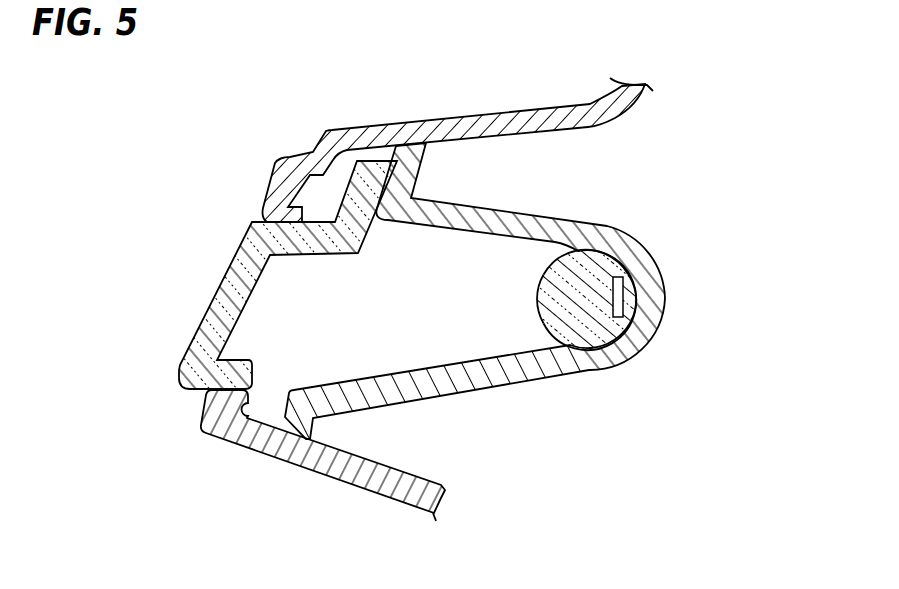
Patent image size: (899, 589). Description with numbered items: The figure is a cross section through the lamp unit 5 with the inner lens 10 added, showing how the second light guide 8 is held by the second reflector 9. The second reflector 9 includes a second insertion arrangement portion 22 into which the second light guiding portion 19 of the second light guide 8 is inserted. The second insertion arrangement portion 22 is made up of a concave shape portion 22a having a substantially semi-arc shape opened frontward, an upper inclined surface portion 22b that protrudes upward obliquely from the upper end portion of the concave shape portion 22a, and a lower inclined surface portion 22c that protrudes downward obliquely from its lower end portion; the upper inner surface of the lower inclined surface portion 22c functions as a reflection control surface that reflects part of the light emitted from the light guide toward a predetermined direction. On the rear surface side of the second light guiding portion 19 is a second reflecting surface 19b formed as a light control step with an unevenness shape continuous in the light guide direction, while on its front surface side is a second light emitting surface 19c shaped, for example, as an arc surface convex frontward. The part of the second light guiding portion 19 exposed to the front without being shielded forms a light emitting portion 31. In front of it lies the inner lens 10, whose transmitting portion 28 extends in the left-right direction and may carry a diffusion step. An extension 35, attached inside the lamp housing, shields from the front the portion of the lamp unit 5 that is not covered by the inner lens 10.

The lamp unit 5 is at (430, 290).
The second light guide 8 is at (598, 258).
The second reflector 9 is at (643, 265).
The inner lens 10 is at (246, 275).
The second light guiding portion 19 is at (650, 257).
The second reflecting surface 19b is at (623, 290).
The second light emitting surface 19c is at (535, 297).
The second insertion arrangement portion 22 is at (478, 290).
The concave shape portion 22a is at (654, 318).
The upper inclined surface portion 22b is at (482, 220).
The lower inclined surface portion 22c is at (465, 385).
The transmitting portion 28 is at (230, 282).
The light emitting portion 31 is at (553, 310).
The extension 35 is at (487, 127).